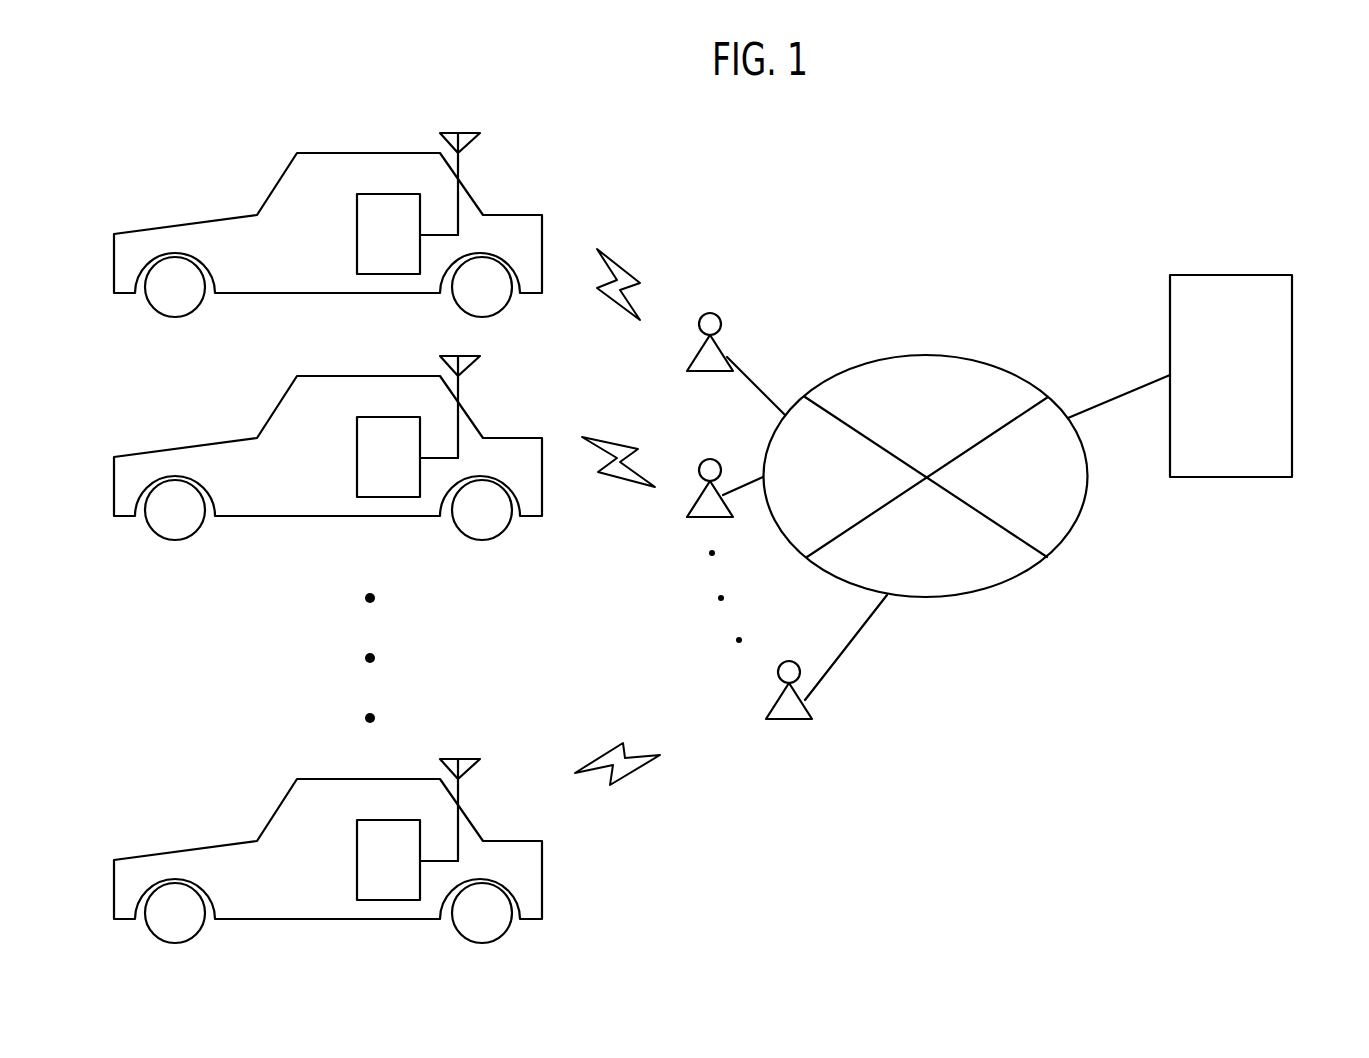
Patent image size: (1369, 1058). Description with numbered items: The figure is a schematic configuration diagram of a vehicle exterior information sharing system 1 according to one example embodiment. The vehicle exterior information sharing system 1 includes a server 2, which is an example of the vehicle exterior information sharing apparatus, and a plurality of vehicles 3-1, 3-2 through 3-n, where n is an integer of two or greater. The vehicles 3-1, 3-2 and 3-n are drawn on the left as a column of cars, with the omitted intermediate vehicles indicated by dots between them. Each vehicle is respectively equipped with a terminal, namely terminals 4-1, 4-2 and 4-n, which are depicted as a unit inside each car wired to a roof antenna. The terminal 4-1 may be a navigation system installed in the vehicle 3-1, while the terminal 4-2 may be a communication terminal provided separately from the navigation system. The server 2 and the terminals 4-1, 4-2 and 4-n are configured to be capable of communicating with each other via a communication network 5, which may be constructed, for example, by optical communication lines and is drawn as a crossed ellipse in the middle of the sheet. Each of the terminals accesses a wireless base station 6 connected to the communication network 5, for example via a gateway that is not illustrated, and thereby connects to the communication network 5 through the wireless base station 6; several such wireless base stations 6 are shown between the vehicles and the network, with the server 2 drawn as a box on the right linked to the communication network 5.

The vehicle exterior information sharing system 1 is at (1243, 875).
The server 2 is at (1292, 443).
The vehicle 3-1 is at (283, 200).
The vehicle 3-2 is at (328, 445).
The vehicle 3-n is at (328, 848).
The terminal 4-1 is at (387, 275).
The terminal 4-2 is at (393, 489).
The terminal 4-n is at (393, 892).
The communication network 5 is at (972, 597).
The wireless base station 6 is at (717, 318).